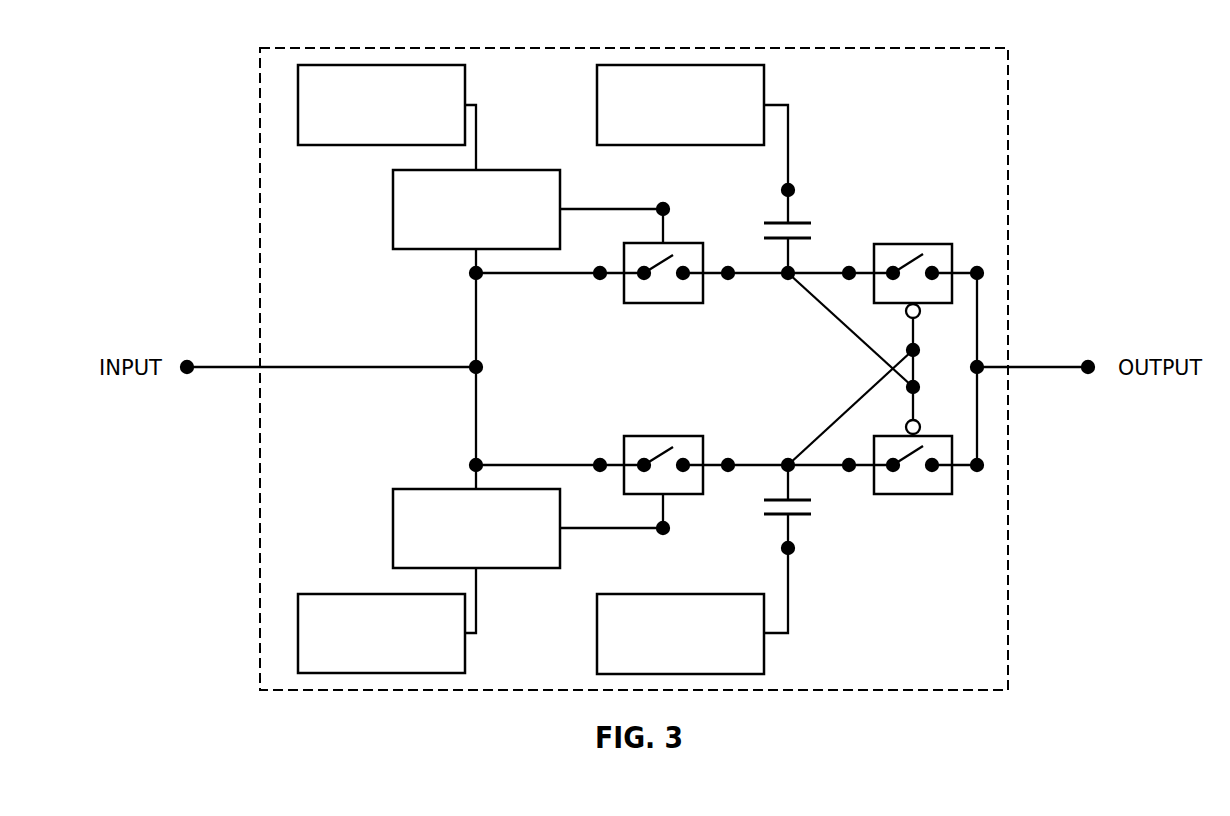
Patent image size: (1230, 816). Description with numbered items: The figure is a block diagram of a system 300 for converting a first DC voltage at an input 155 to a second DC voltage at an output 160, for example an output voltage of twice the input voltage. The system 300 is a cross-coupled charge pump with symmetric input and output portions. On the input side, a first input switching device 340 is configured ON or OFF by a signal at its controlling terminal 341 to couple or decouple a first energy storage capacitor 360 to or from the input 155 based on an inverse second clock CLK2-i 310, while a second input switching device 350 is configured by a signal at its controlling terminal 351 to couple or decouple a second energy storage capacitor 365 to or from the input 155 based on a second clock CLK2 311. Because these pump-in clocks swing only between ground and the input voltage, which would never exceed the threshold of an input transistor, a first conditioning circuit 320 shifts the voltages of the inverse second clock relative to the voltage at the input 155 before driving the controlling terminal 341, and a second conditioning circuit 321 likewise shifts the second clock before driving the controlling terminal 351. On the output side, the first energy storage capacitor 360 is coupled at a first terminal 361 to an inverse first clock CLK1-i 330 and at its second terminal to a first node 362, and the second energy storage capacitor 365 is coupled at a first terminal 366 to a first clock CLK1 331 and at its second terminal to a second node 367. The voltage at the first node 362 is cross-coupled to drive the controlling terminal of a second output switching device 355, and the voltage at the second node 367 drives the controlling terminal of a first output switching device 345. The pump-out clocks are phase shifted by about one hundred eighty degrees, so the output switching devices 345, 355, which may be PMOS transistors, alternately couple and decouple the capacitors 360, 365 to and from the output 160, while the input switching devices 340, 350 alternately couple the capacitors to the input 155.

The system 300 is at (256, 66).
The inverse second clock (CLK2-i) 310 is at (400, 132).
The second clock (CLK2) 311 is at (400, 664).
The first conditioning circuit 320 is at (495, 237).
The second conditioning circuit 321 is at (495, 557).
The inverse first clock (CLK1-i) 330 is at (699, 132).
The first clock (CLK1) 331 is at (699, 662).
The first input switching device 340 is at (656, 305).
The controlling terminal 341 is at (672, 203).
The first output switching device 345 is at (892, 308).
The second input switching device 350 is at (662, 434).
The controlling terminal 351 is at (671, 538).
The second output switching device 355 is at (894, 433).
The first energy storage capacitor 360 is at (809, 219).
The first terminal 361 is at (798, 183).
The first node 362 is at (798, 265).
The second energy storage capacitor 365 is at (802, 518).
The first terminal 366 is at (798, 554).
The second node 367 is at (798, 476).
The input 155 is at (242, 363).
The output 160 is at (1073, 364).